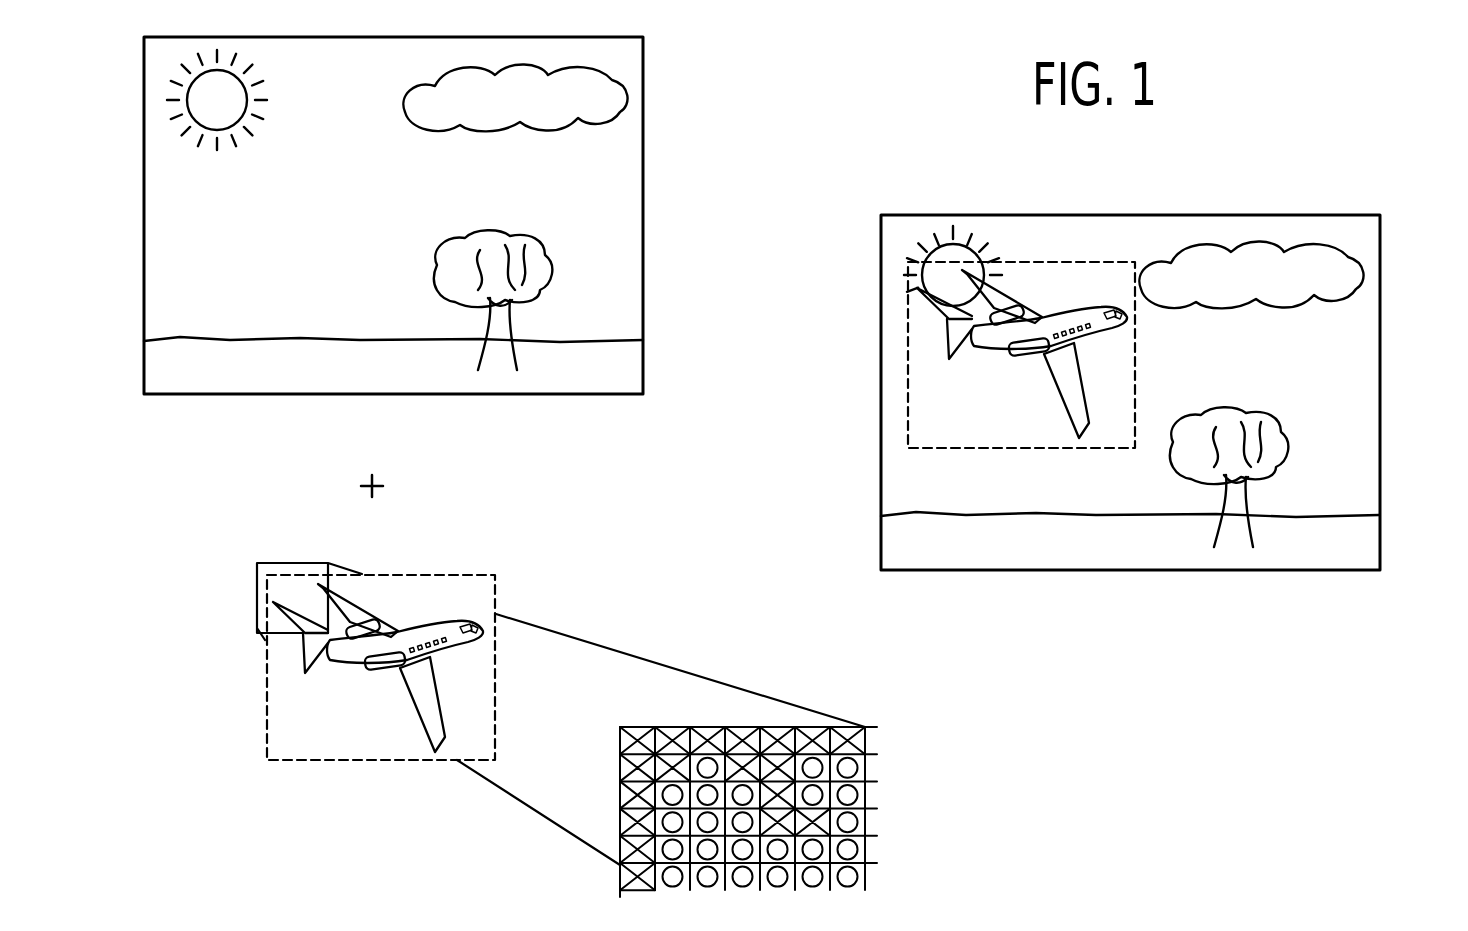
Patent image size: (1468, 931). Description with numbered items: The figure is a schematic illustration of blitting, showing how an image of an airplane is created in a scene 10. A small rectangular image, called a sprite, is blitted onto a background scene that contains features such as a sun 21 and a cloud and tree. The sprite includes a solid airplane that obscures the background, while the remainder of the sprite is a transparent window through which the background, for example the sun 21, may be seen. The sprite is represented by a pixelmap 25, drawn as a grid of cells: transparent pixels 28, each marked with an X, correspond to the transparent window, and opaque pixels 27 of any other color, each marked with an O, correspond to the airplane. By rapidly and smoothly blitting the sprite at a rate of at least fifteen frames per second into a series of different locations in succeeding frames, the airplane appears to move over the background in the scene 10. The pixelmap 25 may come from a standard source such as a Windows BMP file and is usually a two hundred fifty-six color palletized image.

The scene 10 is at (1381, 350).
The sun 21 is at (947, 238).
The pixelmap 25 is at (749, 776).
The opaque pixels 27 is at (815, 768).
The transparent pixels 28 is at (810, 727).